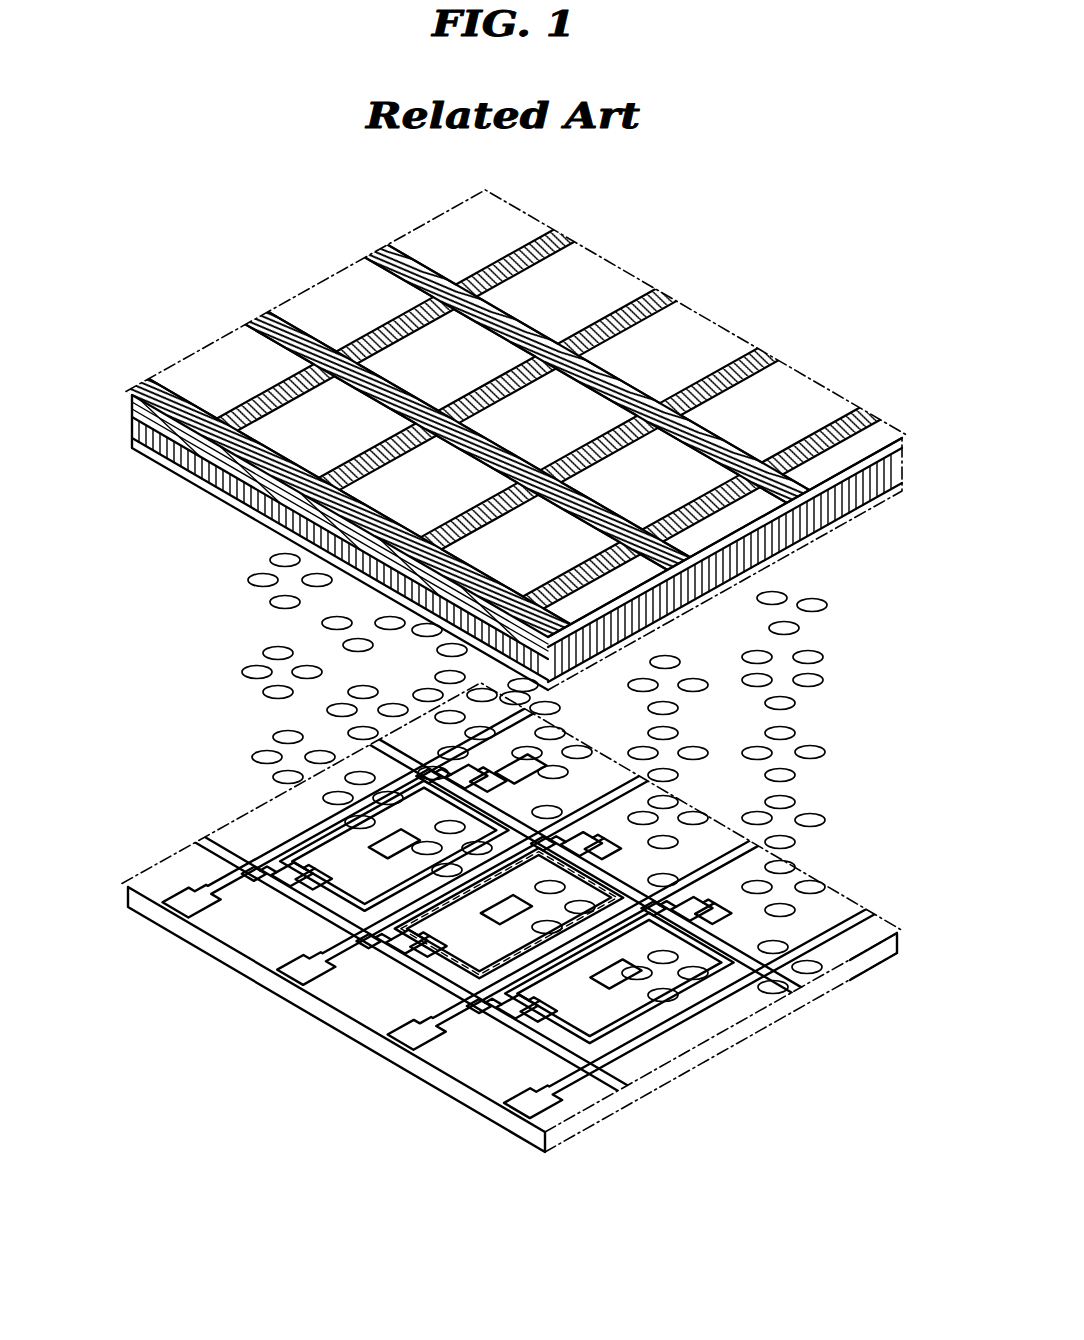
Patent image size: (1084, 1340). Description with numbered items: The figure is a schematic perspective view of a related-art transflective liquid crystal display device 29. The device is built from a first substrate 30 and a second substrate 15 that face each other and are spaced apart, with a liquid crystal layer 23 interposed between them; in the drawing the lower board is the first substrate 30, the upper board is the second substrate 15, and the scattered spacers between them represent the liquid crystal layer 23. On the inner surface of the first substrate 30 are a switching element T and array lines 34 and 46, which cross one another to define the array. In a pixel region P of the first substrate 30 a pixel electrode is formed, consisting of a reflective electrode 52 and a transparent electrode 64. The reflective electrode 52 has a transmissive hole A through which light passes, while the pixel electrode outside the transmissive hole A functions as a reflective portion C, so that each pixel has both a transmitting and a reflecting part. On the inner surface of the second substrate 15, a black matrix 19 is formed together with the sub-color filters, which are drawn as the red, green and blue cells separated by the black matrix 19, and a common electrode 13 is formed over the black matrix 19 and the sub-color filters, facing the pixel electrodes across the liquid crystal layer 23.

The common electrode 13 is at (128, 410).
The second substrate 15 is at (535, 411).
The black matrix 19 is at (820, 528).
The liquid crystal layer 23 is at (812, 752).
The transflective liquid crystal display device 29 is at (846, 1046).
The first substrate 30 is at (545, 1147).
The array line 34 is at (556, 882).
The array line 46 is at (524, 911).
The reflective electrode 52 is at (544, 890).
The transparent electrode 64 is at (505, 908).
The pixel region P is at (509, 913).
The switching element T is at (497, 1035).
The reflective portion C is at (717, 997).
The transmissive hole A is at (619, 977).